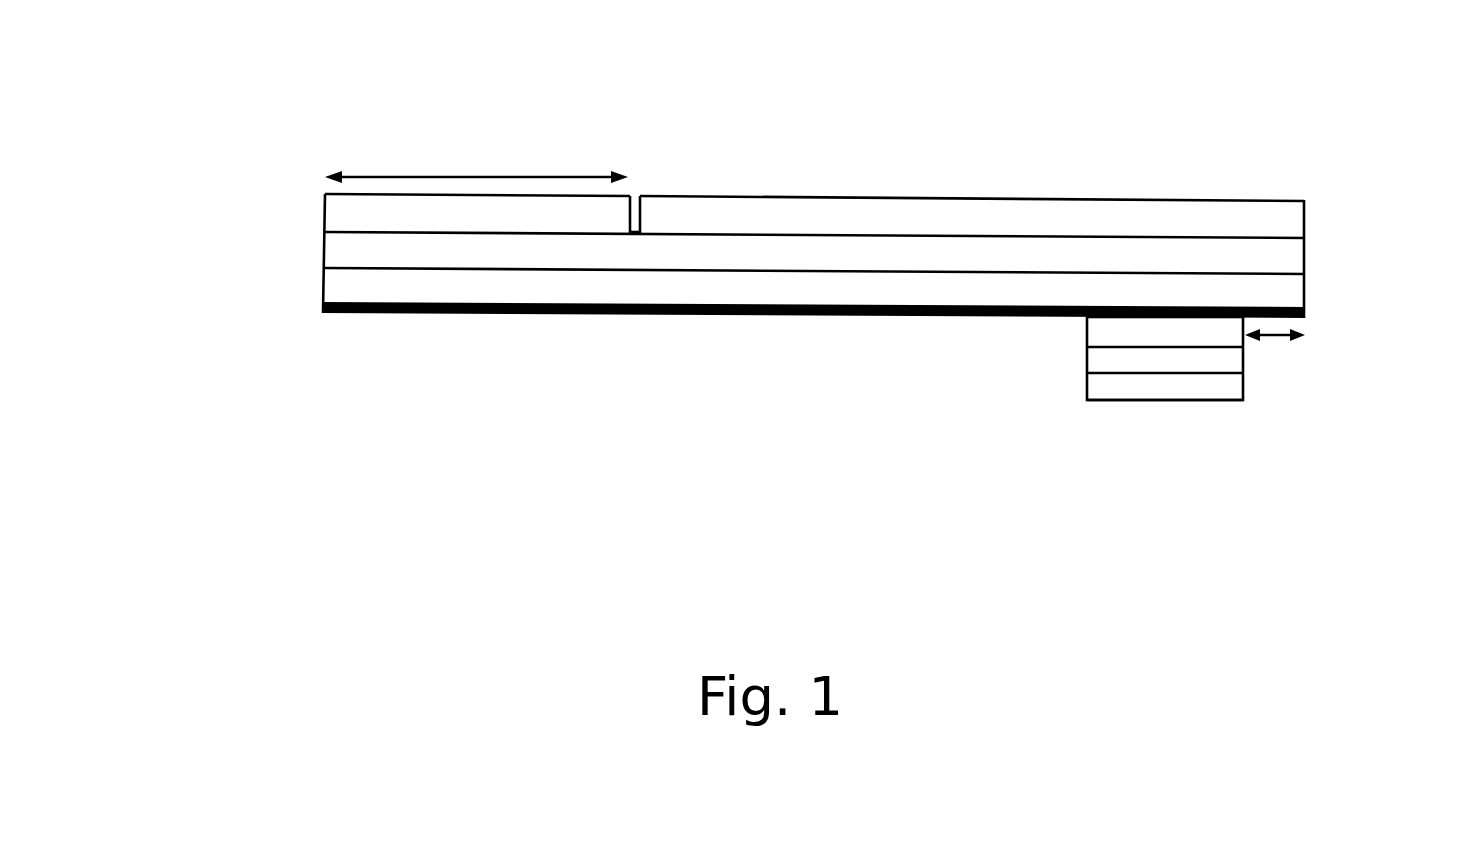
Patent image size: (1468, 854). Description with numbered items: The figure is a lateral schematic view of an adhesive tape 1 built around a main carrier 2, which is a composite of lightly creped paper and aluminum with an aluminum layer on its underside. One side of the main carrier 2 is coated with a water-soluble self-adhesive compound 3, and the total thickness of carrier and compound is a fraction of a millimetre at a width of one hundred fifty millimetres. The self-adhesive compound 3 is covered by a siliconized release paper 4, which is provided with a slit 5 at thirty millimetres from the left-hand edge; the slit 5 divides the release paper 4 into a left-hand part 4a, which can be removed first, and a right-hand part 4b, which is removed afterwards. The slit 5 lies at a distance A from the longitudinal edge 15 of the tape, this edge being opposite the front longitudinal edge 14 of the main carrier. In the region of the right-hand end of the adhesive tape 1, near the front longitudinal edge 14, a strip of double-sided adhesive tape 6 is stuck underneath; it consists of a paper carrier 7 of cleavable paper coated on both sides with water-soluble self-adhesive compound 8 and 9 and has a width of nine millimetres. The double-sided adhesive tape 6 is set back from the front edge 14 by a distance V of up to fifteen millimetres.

The adhesive tape 1 is at (758, 288).
The main carrier 2 is at (1272, 293).
The water-soluble self-adhesive compound 3 is at (1270, 260).
The siliconized release paper 4 is at (742, 146).
The left-hand part of the release paper 4a is at (395, 216).
The right-hand part of the release paper 4b is at (938, 217).
The slit 5 is at (635, 188).
The double-sided adhesive tape 6 is at (1056, 446).
The paper carrier 7 is at (1113, 363).
The water-soluble self-adhesive compound 8 is at (1110, 333).
The water-soluble self-adhesive compound 9 is at (1160, 388).
The front longitudinal edge 14 is at (1304, 200).
The longitudinal edge 15 is at (327, 315).
The distance of the slit from the longitudinal edge A is at (1403, 335).
The distance of the double-sided adhesive tape from the front edge V is at (1273, 345).